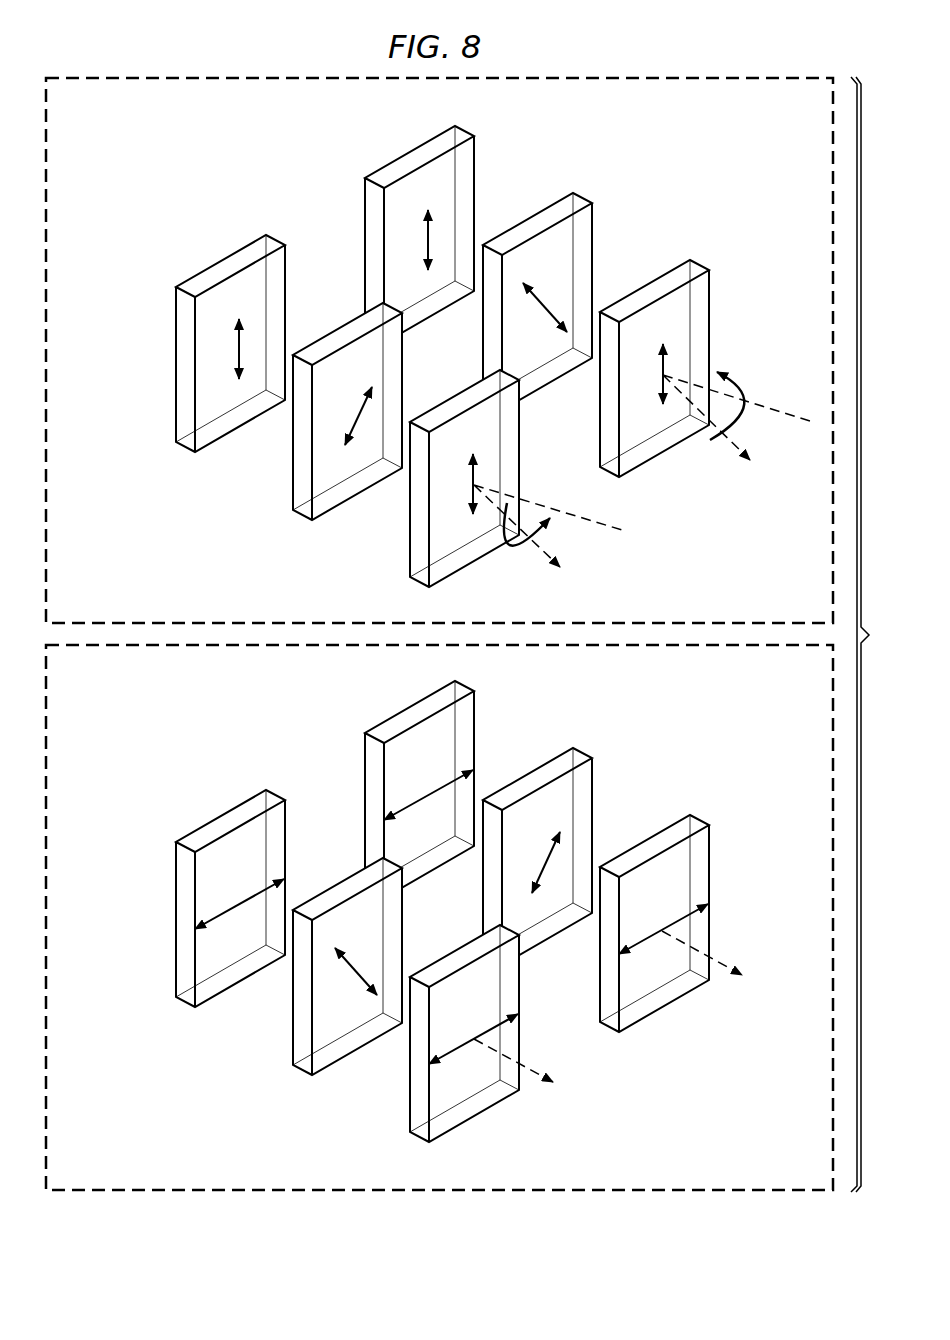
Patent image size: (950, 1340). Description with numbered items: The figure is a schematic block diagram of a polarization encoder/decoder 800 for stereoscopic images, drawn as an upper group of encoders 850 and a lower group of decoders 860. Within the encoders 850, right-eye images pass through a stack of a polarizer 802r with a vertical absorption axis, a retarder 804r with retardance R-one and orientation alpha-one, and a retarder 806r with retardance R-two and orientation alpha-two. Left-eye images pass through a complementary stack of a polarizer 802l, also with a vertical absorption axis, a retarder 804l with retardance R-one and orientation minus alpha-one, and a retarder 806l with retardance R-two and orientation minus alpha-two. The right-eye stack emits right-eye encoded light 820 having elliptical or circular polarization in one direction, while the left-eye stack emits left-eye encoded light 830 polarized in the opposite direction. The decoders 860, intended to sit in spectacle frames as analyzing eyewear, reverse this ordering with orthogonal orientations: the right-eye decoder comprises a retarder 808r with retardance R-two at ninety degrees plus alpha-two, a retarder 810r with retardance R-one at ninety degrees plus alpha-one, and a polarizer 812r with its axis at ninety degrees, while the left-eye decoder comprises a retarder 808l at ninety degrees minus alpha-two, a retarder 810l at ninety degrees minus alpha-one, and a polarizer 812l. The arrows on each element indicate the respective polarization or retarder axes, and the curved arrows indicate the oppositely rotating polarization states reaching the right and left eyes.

The polarization encoder/decoder 800 is at (656, 63).
The encoders 850 is at (260, 155).
The decoders 860 is at (260, 722).
The polarizer 802r is at (176, 397).
The retarder 804r is at (293, 465).
The retarder 806r is at (410, 535).
The polarizer 802l is at (474, 157).
The retarder 804l is at (592, 224).
The retarder 806l is at (709, 291).
The retarder 808r is at (176, 987).
The retarder 810r is at (293, 1048).
The polarizer 812r is at (411, 1117).
The retarder 808l is at (498, 700).
The retarder 810l is at (615, 771).
The polarizer 812l is at (709, 851).
The right-eye encoded light 820 is at (543, 552).
The left-eye encoded light 830 is at (776, 408).